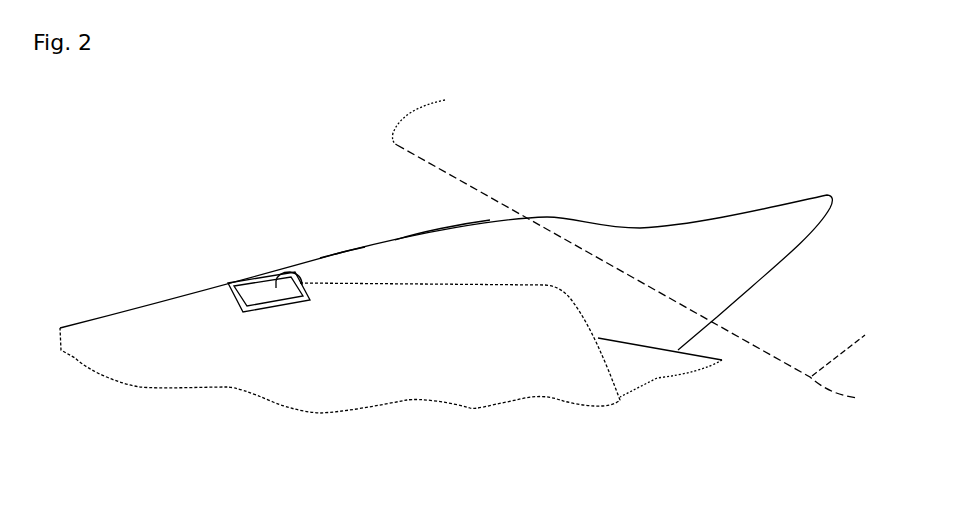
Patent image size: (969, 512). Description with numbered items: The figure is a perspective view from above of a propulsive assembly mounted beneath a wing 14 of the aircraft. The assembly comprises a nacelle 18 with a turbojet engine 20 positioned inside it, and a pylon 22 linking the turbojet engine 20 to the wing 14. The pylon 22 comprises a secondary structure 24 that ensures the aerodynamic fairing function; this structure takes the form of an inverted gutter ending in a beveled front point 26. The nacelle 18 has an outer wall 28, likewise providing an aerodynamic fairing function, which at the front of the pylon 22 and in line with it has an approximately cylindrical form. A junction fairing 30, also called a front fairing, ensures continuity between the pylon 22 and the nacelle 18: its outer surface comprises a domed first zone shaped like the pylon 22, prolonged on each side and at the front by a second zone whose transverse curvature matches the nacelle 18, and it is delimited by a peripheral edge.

The wing 14 is at (830, 352).
The nacelle 18 is at (133, 302).
The turbojet engine 20 is at (657, 377).
The pylon 22 is at (400, 238).
The secondary structure 24 is at (330, 240).
The beveled front point 26 is at (288, 275).
The outer wall 28 is at (303, 357).
The junction fairing 30 is at (233, 267).